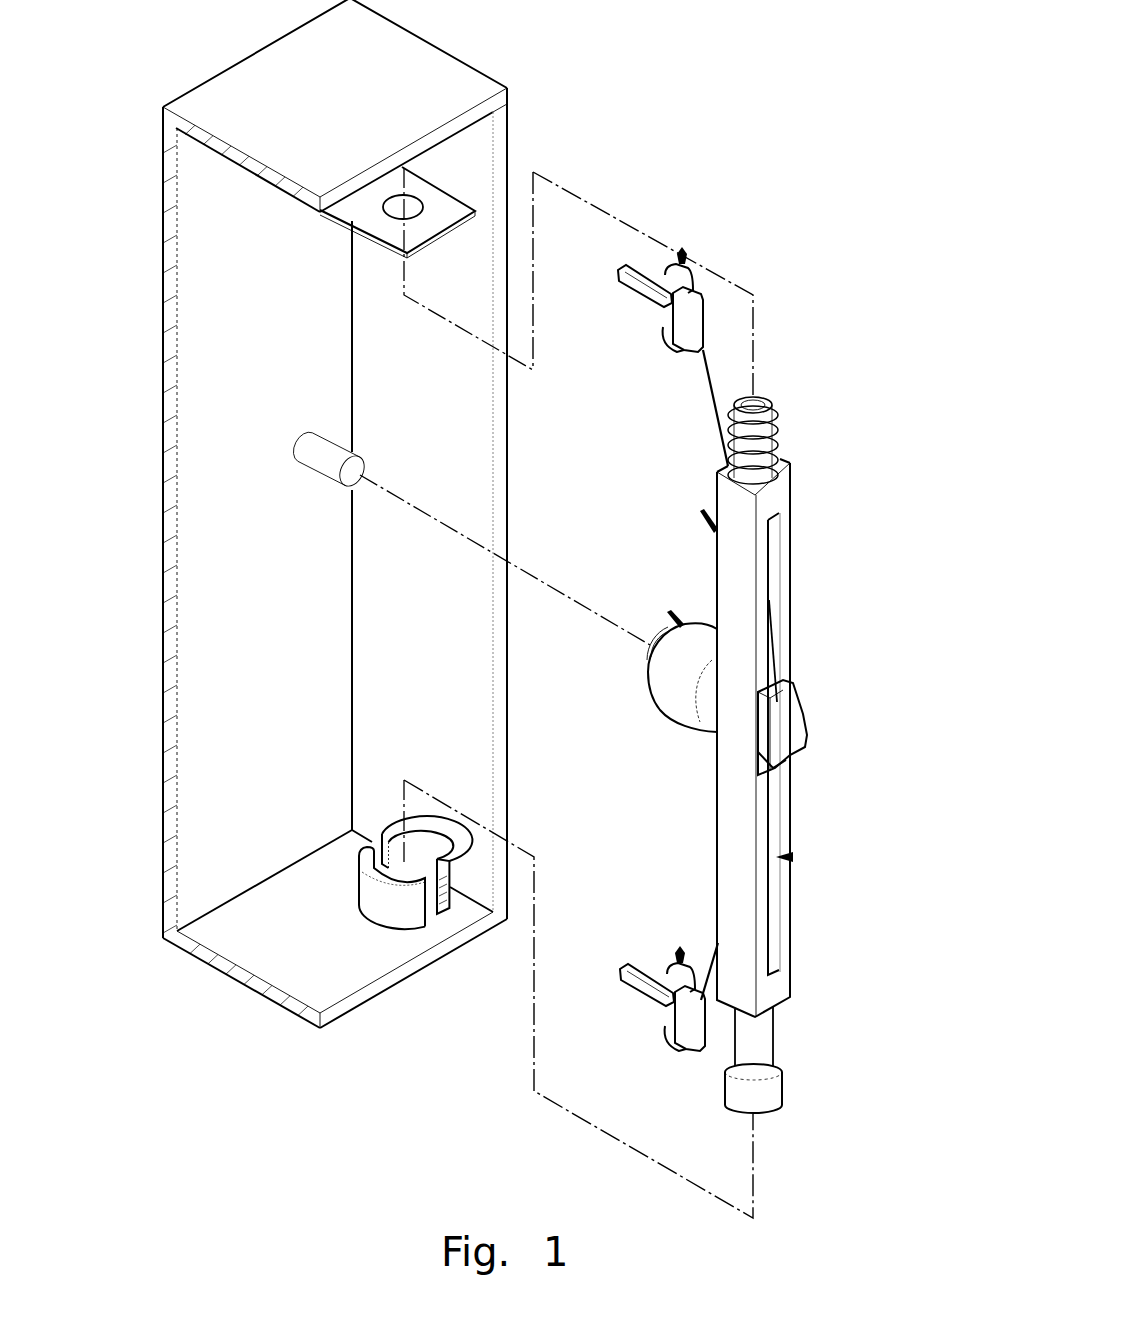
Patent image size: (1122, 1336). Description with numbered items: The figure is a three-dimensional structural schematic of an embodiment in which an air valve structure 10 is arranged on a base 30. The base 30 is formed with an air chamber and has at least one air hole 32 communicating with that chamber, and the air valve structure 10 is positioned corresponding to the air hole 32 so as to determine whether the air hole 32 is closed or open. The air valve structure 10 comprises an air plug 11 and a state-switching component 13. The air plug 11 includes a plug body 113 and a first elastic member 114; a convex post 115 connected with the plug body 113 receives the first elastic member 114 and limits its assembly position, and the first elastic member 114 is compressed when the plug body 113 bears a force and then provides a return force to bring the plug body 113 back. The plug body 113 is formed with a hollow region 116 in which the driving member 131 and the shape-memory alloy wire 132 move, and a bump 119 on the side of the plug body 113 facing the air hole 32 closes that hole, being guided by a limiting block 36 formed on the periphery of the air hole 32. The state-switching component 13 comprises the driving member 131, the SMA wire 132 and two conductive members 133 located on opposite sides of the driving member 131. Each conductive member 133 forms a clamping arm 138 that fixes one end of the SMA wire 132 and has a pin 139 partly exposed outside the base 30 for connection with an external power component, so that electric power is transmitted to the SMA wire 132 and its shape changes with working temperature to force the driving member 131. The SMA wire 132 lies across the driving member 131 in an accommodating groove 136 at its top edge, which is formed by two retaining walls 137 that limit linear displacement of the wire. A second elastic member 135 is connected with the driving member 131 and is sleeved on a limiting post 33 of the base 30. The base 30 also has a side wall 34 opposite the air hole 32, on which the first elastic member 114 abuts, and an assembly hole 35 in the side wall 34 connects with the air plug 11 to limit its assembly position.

The air valve structure 10 is at (607, 453).
The air plug 11 is at (700, 512).
The state-switching component 13 is at (668, 612).
The base 30 is at (237, 92).
The air hole 32 is at (450, 898).
The limiting post 33 is at (313, 440).
The side wall 34 is at (440, 207).
The assembly hole 35 is at (415, 198).
The limiting block 36 is at (390, 918).
The plug body 113 is at (793, 500).
The first elastic member 114 is at (778, 438).
The convex post 115 is at (757, 399).
The hollow region 116 is at (793, 857).
The bump 119 is at (785, 1090).
The driving member 131 is at (672, 700).
The shape-memory alloy wire 132 is at (778, 652).
The conductive member 133 is at (682, 247).
The second elastic member 135 is at (640, 658).
The accommodating groove 136 is at (803, 725).
The retaining wall 137 is at (760, 750).
The clamping arm 138 is at (690, 332).
The pin 139 is at (625, 284).